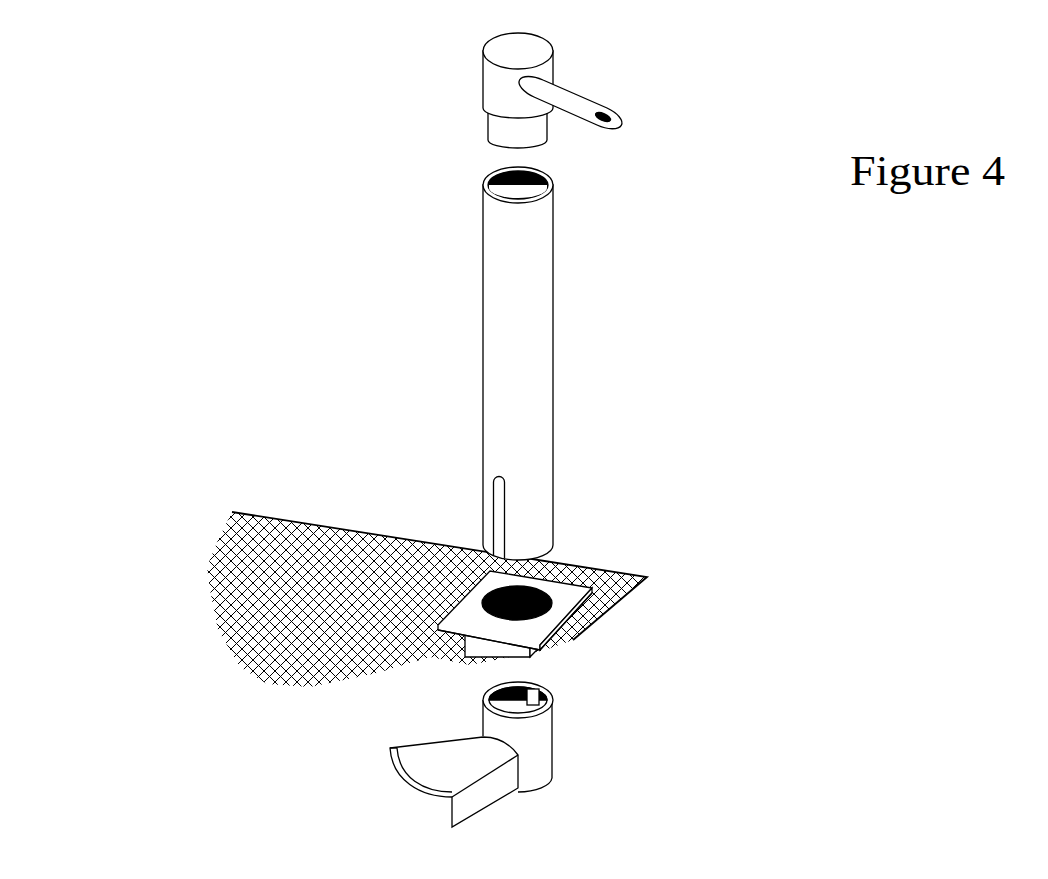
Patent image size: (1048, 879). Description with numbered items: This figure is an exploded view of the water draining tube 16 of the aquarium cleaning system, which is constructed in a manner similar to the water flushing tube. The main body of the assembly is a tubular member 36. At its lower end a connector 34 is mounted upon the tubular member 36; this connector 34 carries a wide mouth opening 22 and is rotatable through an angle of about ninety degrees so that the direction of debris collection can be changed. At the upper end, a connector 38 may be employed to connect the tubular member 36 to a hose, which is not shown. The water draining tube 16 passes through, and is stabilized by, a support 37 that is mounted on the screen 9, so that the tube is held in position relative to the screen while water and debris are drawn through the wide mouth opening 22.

The screen 9 is at (258, 640).
The water draining tube 16 is at (476, 327).
The wide mouth opening 22 is at (437, 797).
The connector 34 is at (555, 745).
The tubular member 36 is at (555, 268).
The support 37 is at (540, 645).
The connector 38 is at (553, 50).